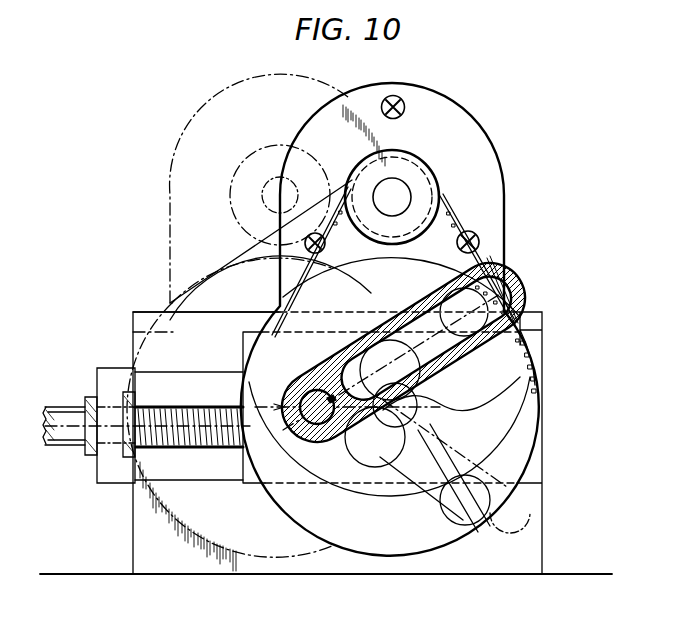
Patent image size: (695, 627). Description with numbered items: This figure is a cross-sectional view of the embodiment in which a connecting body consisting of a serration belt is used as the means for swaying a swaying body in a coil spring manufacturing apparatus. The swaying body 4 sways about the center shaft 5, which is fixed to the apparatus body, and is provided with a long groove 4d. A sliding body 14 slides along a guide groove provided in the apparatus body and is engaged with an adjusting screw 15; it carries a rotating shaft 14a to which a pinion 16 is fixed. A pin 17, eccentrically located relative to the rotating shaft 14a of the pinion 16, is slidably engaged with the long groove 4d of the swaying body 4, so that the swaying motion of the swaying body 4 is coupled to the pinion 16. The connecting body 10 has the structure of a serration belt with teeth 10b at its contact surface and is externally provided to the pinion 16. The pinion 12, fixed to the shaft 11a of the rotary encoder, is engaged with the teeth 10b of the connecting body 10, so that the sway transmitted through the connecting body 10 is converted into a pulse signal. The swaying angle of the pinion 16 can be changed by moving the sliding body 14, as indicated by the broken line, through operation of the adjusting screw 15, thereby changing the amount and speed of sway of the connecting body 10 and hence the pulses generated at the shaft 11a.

The swaying body 4 is at (517, 277).
The long groove 4d is at (512, 383).
The center shaft 5 is at (315, 447).
The connecting body 10 is at (455, 220).
The tooth 10b is at (470, 232).
The shaft 11a is at (402, 165).
The pinion 12 is at (398, 190).
The sliding body 14 is at (255, 478).
The rotating shaft 14a is at (537, 443).
The adjusting screw 15 is at (190, 403).
The pinion 16 is at (515, 400).
The pin 17 is at (524, 350).